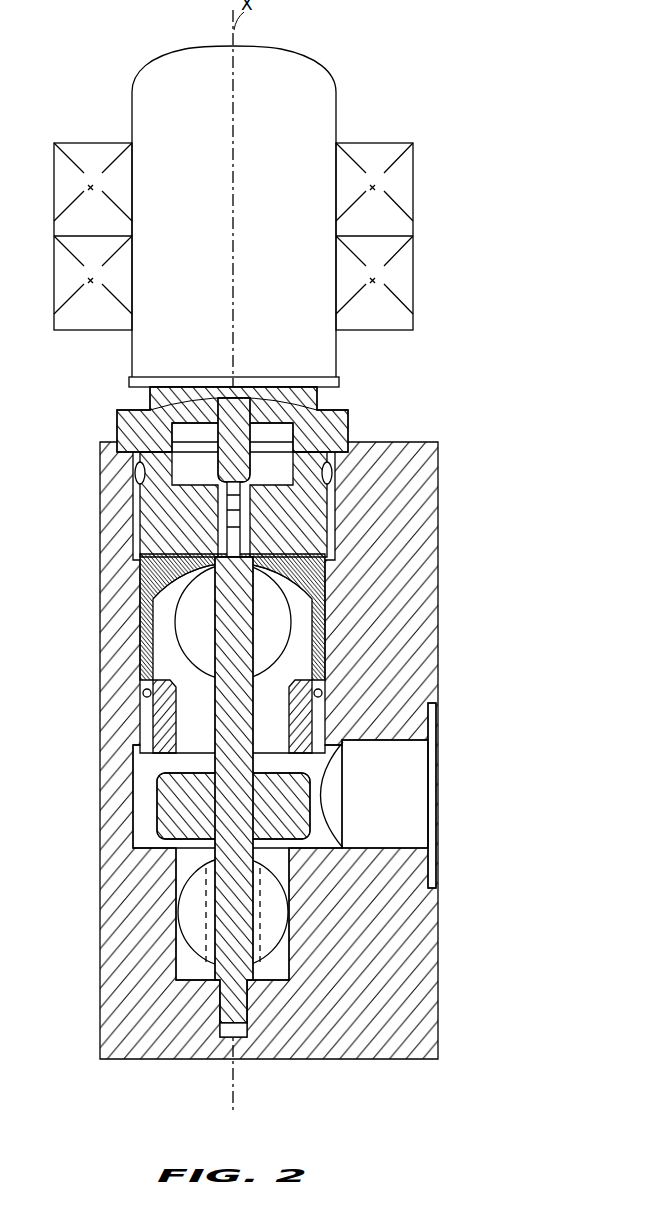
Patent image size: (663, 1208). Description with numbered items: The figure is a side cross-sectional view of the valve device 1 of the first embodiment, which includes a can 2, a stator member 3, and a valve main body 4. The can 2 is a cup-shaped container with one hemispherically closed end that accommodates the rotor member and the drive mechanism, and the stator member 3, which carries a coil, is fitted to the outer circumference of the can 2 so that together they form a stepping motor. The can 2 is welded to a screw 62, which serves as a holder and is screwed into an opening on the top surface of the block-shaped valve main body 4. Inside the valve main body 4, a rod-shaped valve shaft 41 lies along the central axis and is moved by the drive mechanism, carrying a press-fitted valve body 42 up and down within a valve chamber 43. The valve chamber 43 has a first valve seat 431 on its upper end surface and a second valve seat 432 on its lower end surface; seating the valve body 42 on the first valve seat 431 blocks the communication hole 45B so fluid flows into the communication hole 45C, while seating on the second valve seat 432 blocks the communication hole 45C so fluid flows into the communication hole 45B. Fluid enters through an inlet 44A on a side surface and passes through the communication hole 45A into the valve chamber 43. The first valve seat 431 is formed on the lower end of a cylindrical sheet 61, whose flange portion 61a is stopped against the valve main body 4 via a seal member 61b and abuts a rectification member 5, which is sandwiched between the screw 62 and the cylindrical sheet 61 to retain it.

The valve device 1 is at (404, 69).
The can 2 is at (335, 95).
The stator member 3 is at (413, 182).
The valve main body 4 is at (437, 441).
The rectification member 5 is at (281, 597).
The valve shaft 41 is at (253, 735).
The valve body 42 is at (158, 805).
The valve chamber 43 is at (143, 765).
The first valve seat 431 is at (176, 750).
The second valve seat 432 is at (176, 847).
The inlet 44A is at (437, 817).
The communication hole 45A is at (428, 727).
The communication hole 45B is at (310, 572).
The communication hole 45C is at (282, 893).
The cylindrical sheet 61 is at (150, 710).
The flange portion 61a is at (147, 693).
The seal member 61b is at (320, 690).
The screw 62 is at (115, 430).